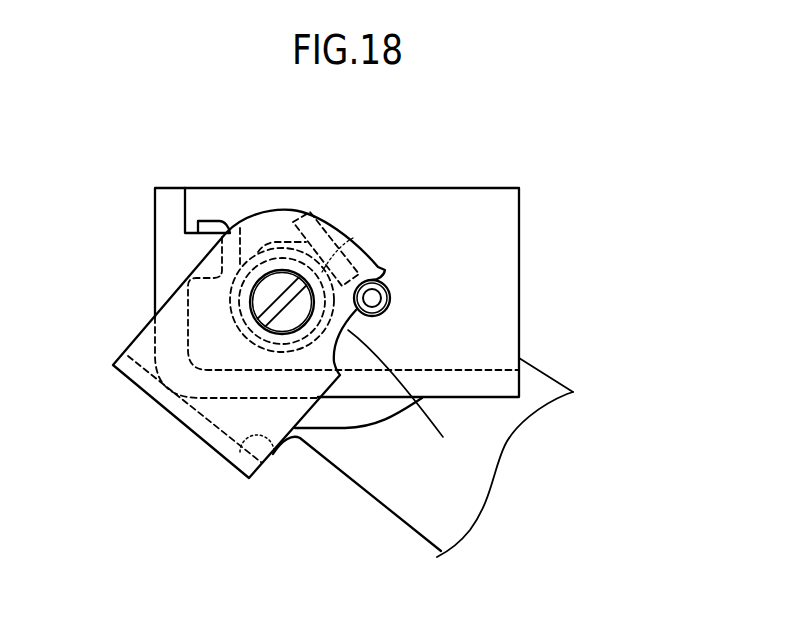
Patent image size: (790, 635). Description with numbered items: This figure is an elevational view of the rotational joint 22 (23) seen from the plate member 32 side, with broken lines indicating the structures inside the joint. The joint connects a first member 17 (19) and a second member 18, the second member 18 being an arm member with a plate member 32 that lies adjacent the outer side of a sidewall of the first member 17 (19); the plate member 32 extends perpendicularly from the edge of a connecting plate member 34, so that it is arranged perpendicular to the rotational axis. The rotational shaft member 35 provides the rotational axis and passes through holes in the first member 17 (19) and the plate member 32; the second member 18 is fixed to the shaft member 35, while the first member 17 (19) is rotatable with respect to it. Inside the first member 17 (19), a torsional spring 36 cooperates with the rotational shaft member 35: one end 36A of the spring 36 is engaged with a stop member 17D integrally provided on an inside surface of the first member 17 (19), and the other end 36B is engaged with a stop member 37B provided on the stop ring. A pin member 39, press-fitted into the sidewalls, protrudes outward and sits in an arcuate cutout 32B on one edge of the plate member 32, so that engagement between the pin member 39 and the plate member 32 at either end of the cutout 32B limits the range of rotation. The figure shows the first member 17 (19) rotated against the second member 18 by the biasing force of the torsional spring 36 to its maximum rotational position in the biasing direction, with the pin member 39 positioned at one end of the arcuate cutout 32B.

The first member 17 is at (398, 186).
The first member 19 is at (337, 274).
The stop member 17D is at (197, 240).
The second member 18 is at (382, 504).
The rotational joint 22 is at (354, 342).
The rotational joint 23 is at (354, 342).
The plate member 32 is at (143, 330).
The arcuate cutout 32B is at (443, 437).
The connecting plate member 34 is at (274, 452).
The rotational shaft member 35 is at (275, 288).
The torsional spring 36 is at (271, 241).
The one end of the torsional spring 36A is at (214, 220).
The other end of the torsional spring 36B is at (318, 216).
The stop member 37B is at (353, 238).
The pin member 39 is at (392, 296).